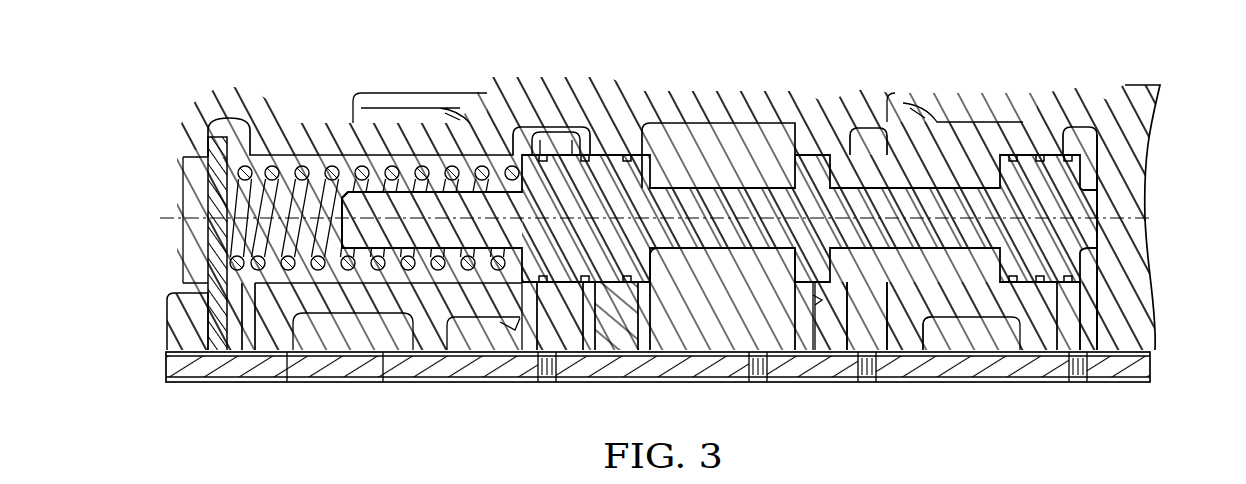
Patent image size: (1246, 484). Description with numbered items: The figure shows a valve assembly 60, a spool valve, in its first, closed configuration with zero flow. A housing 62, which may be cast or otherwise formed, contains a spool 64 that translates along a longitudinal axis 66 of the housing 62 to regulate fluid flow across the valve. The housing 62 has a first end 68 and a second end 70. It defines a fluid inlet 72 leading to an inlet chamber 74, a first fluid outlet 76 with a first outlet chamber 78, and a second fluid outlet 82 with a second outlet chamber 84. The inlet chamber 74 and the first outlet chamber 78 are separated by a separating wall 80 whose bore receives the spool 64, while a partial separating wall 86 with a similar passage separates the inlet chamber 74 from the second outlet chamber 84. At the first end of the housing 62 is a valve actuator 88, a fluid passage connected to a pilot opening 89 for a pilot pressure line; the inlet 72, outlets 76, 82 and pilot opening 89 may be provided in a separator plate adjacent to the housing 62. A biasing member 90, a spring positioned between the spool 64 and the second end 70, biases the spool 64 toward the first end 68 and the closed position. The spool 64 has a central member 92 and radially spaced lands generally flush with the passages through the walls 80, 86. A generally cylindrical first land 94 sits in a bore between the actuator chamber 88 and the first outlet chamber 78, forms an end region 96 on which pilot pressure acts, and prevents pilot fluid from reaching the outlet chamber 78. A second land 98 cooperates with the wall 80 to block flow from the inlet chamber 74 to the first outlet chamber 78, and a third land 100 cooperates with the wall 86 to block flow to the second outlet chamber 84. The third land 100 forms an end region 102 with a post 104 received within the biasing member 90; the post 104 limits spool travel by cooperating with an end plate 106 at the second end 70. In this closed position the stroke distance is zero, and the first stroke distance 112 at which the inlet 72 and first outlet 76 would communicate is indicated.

The valve assembly 60 is at (168, 100).
The housing 62 is at (617, 118).
The spool 64 is at (772, 225).
The longitudinal axis 66 is at (1158, 217).
The first end 68 is at (1127, 137).
The second end 70 is at (182, 327).
The fluid inlet 72 is at (705, 383).
The inlet chamber 74 is at (740, 313).
The first fluid outlet 76 is at (872, 330).
The first outlet chamber 78 is at (893, 320).
The separating wall 80 is at (830, 322).
The second fluid outlet 82 is at (512, 380).
The second outlet chamber 84 is at (543, 327).
The partial separating wall 86 is at (618, 330).
The valve actuator 88 is at (1087, 330).
The pilot opening 89 is at (1083, 380).
The biasing member 90 is at (318, 263).
The central member 92 is at (757, 207).
The first land 94 is at (1027, 170).
The end region 96 is at (1004, 70).
The second land 98 is at (817, 177).
The third land 100 is at (570, 203).
The end region 102 is at (544, 70).
The post 104 is at (395, 203).
The end plate 106 is at (218, 327).
The first stroke distance 112 is at (822, 300).